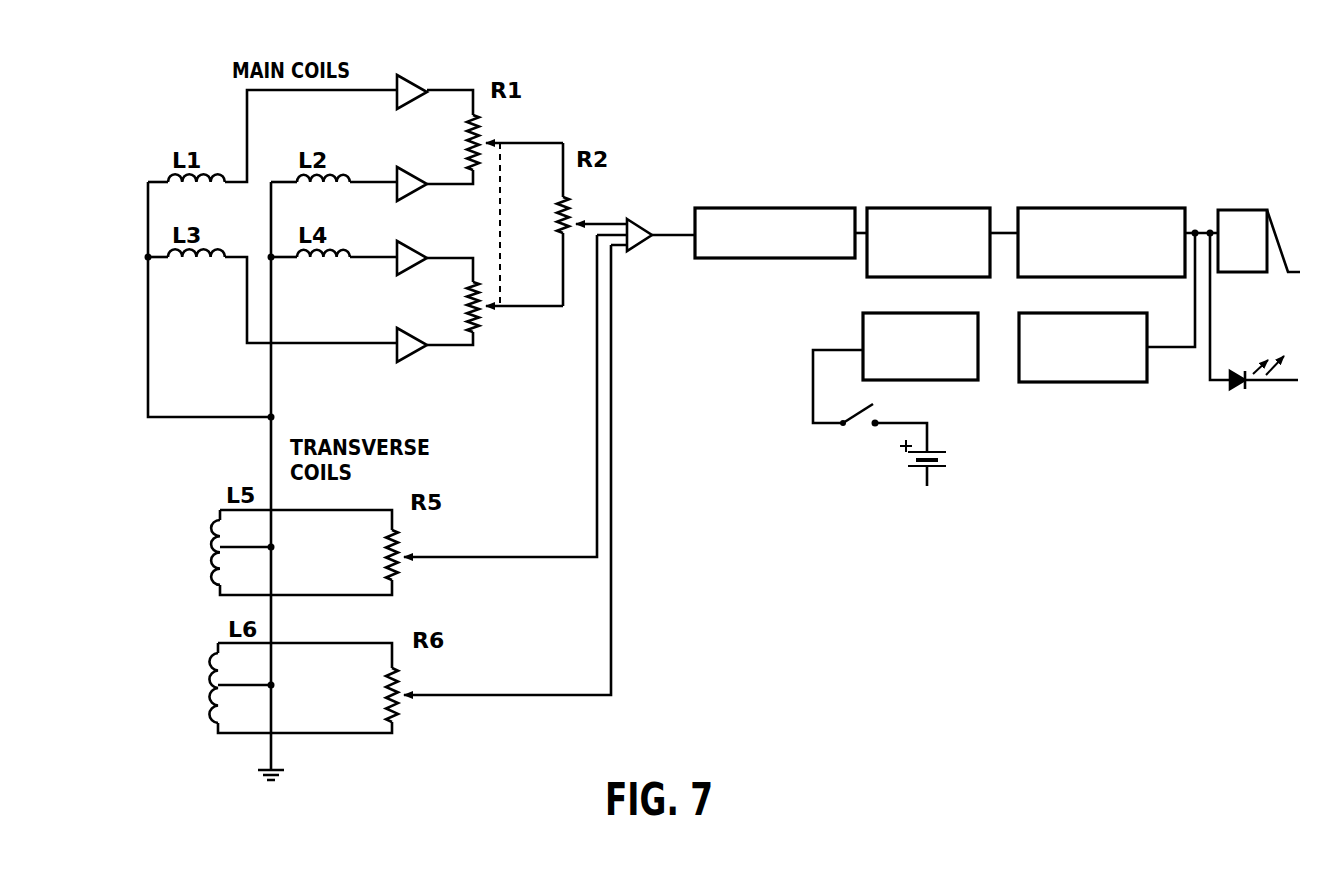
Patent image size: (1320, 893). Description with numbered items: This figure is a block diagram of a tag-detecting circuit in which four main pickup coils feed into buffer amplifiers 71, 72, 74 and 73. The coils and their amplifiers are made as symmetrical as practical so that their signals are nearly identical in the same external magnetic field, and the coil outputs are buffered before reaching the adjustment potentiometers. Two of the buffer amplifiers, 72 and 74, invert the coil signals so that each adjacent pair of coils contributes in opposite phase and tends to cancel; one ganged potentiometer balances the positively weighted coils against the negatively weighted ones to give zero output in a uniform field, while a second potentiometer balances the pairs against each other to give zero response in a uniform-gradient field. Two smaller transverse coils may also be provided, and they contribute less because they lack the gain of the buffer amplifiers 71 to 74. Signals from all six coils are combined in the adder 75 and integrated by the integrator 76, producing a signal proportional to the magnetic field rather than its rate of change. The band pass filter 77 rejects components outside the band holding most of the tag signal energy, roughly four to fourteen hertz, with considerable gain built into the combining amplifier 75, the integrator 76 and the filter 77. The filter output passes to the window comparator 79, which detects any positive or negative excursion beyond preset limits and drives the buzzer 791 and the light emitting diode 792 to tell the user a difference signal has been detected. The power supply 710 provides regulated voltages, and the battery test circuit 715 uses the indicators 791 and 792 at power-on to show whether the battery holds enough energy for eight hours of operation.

The buffer amplifier 71 is at (427, 85).
The buffer amplifier 72 is at (418, 182).
The buffer amplifier 73 is at (420, 258).
The buffer amplifier 74 is at (420, 345).
The adder 75 is at (640, 230).
The integrator 76 is at (798, 208).
The band pass filter 77 is at (938, 208).
The window comparator 79 is at (1084, 208).
The power supply 710 is at (975, 382).
The battery test circuit 715 is at (1090, 384).
The buzzer 791 is at (1268, 210).
The light emitting diode 792 is at (1210, 382).